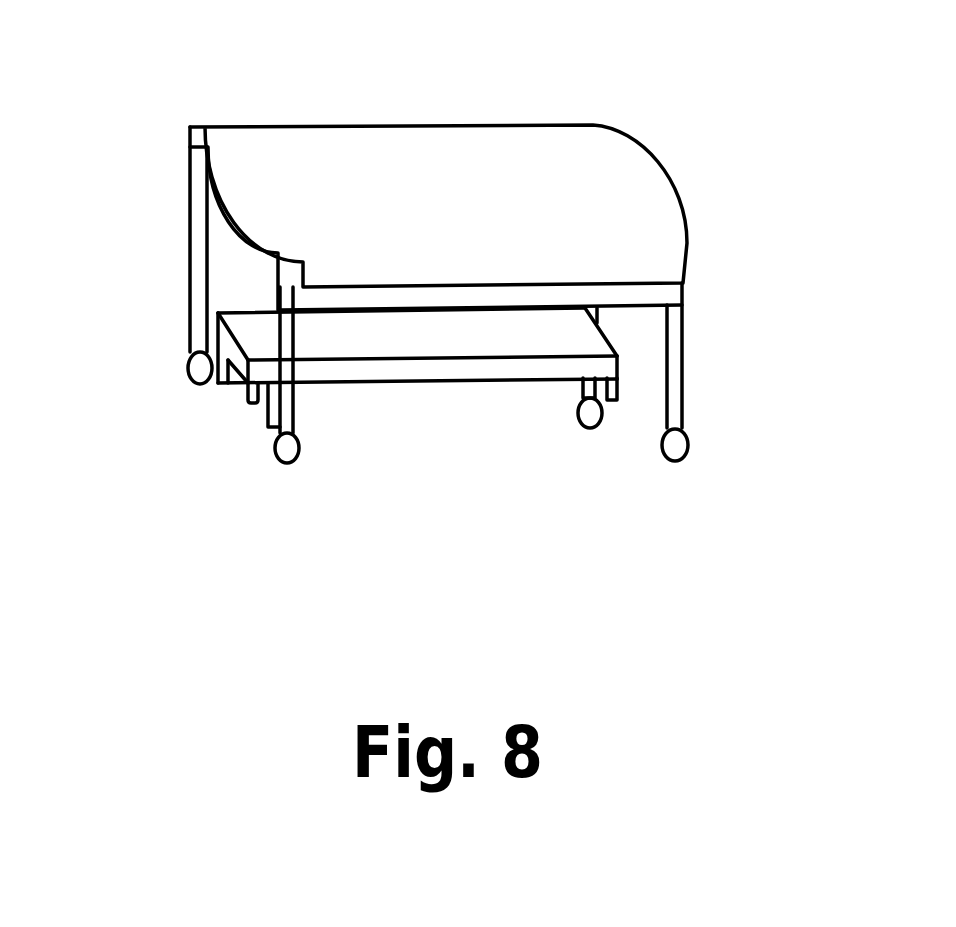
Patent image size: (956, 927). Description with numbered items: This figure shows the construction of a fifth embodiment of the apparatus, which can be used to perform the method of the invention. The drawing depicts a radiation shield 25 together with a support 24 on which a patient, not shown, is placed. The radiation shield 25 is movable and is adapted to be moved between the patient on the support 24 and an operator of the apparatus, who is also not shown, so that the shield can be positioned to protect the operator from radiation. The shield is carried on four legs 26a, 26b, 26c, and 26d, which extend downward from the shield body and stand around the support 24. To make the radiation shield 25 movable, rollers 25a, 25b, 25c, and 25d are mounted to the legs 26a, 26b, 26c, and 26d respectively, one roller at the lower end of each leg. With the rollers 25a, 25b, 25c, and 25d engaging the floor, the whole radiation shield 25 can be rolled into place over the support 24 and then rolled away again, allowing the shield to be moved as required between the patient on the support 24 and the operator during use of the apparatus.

The support 24 is at (268, 425).
The radiation shield 25 is at (480, 125).
The roller 25a is at (187, 365).
The roller 25b is at (287, 467).
The roller 25c is at (688, 452).
The roller 25d is at (590, 428).
The leg 26a is at (190, 212).
The leg 26b is at (293, 400).
The leg 26c is at (683, 358).
The leg 26d is at (534, 404).